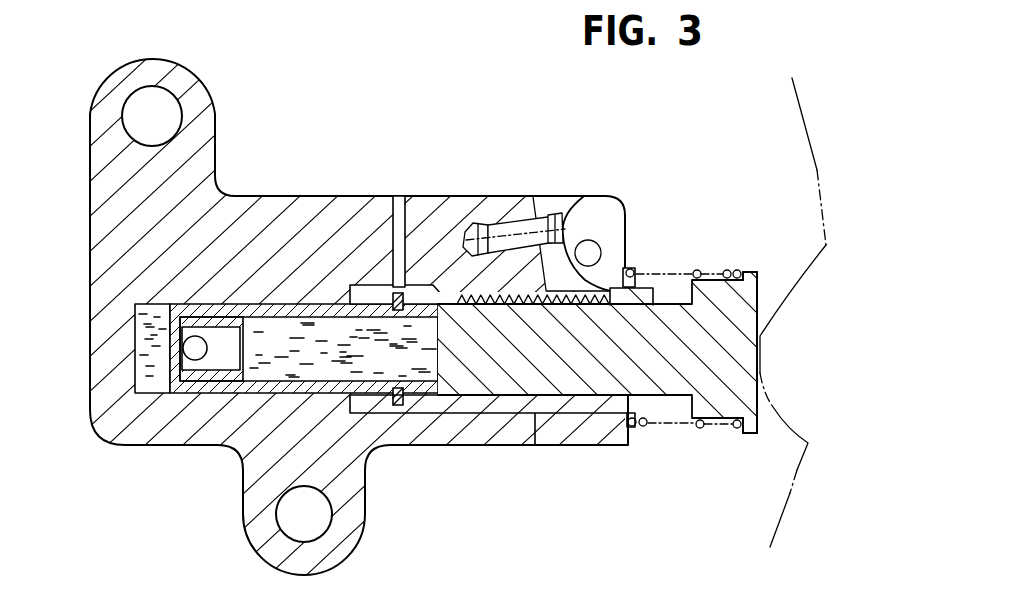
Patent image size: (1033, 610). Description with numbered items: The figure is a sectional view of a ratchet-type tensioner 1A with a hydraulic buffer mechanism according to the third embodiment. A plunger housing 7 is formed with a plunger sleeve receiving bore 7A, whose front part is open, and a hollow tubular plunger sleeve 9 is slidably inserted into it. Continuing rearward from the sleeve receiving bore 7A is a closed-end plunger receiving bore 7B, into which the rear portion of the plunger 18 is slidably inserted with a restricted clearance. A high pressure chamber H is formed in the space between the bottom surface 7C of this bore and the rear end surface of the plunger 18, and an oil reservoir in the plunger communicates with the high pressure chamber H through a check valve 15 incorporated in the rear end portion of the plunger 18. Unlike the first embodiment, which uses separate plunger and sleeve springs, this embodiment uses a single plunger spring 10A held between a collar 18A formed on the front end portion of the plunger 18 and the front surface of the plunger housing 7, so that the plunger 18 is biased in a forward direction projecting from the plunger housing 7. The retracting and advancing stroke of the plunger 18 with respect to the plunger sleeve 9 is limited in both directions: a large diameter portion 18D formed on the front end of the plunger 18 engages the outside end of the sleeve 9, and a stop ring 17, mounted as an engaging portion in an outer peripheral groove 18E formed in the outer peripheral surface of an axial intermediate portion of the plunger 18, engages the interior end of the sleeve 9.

The tensioner 1A is at (307, 170).
The plunger housing 7 is at (453, 208).
The plunger sleeve receiving bore 7A is at (525, 408).
The plunger receiving bore 7B is at (306, 306).
The bottom surface 7C is at (140, 333).
The high pressure chamber H is at (140, 357).
The plunger sleeve 9 is at (601, 407).
The plunger spring 10A is at (697, 270).
The check valve 15 is at (193, 360).
The stop ring 17 is at (405, 402).
The plunger 18 is at (673, 357).
The collar 18A is at (755, 274).
The large diameter portion 18D is at (720, 343).
The outer peripheral groove 18E is at (397, 388).